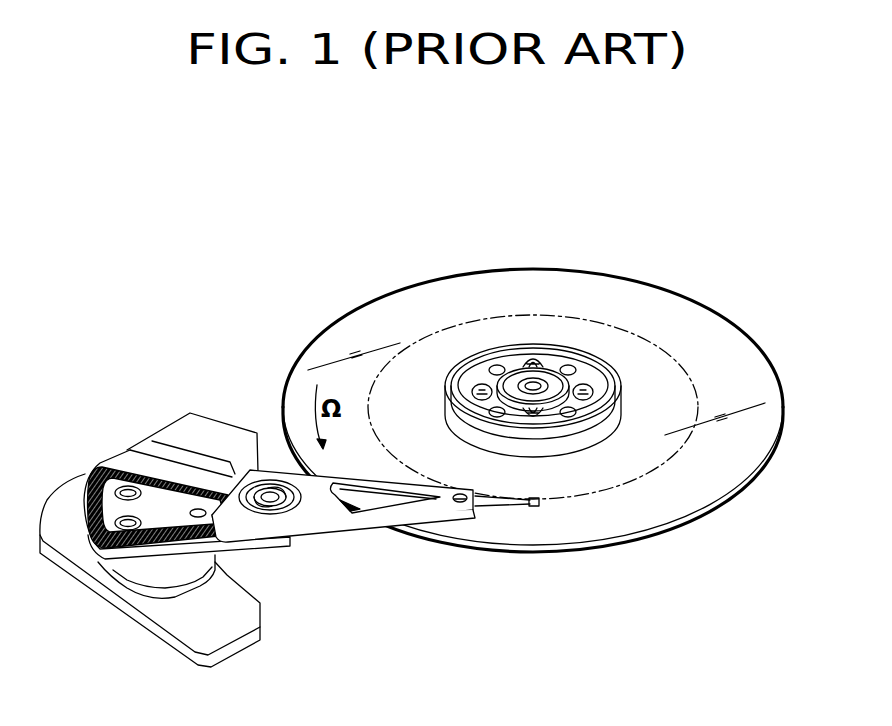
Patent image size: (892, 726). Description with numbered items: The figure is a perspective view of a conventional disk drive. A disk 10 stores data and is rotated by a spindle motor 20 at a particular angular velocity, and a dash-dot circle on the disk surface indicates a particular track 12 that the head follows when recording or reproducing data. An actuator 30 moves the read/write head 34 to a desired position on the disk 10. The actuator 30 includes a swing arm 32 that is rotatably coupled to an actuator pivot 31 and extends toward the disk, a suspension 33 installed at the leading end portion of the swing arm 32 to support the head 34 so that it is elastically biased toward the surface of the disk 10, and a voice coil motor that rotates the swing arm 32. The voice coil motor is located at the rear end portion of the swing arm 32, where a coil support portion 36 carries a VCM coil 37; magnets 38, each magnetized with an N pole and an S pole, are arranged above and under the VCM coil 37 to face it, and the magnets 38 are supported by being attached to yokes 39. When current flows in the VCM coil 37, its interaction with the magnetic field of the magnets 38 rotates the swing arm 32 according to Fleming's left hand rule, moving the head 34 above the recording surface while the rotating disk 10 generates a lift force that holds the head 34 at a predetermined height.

The disk 10 is at (717, 322).
The track 12 is at (613, 320).
The spindle motor 20 is at (513, 360).
The actuator 30 is at (396, 525).
The actuator pivot 31 is at (272, 492).
The swing arm 32 is at (380, 518).
The suspension 33 is at (485, 508).
The read/write head 34 is at (540, 508).
The coil support portion 36 is at (126, 450).
The VCM coil 37 is at (102, 470).
The magnets 38 is at (163, 444).
The yokes 39 is at (208, 424).